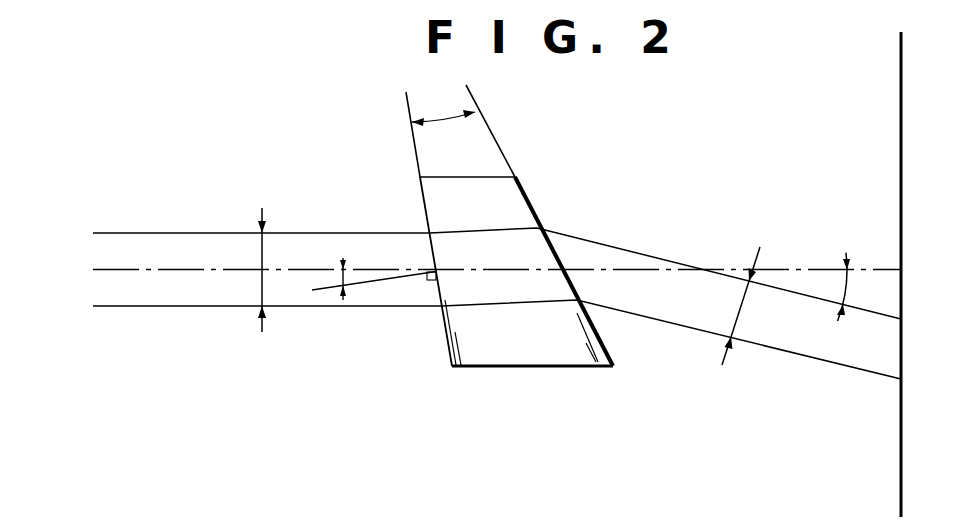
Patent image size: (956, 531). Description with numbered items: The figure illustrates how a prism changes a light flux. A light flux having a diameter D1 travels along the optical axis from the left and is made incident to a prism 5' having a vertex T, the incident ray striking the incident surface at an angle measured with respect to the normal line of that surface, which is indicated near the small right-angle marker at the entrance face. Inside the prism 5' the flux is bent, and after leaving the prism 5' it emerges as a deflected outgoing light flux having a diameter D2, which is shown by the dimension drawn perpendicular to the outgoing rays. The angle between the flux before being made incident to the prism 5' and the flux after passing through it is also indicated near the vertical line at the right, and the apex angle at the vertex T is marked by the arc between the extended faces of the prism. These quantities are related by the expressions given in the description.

The prism 5' is at (509, 225).
The vertex T is at (443, 106).
The diameter of incident light flux D1 is at (276, 262).
The diameter of outgoing light flux D2 is at (758, 296).